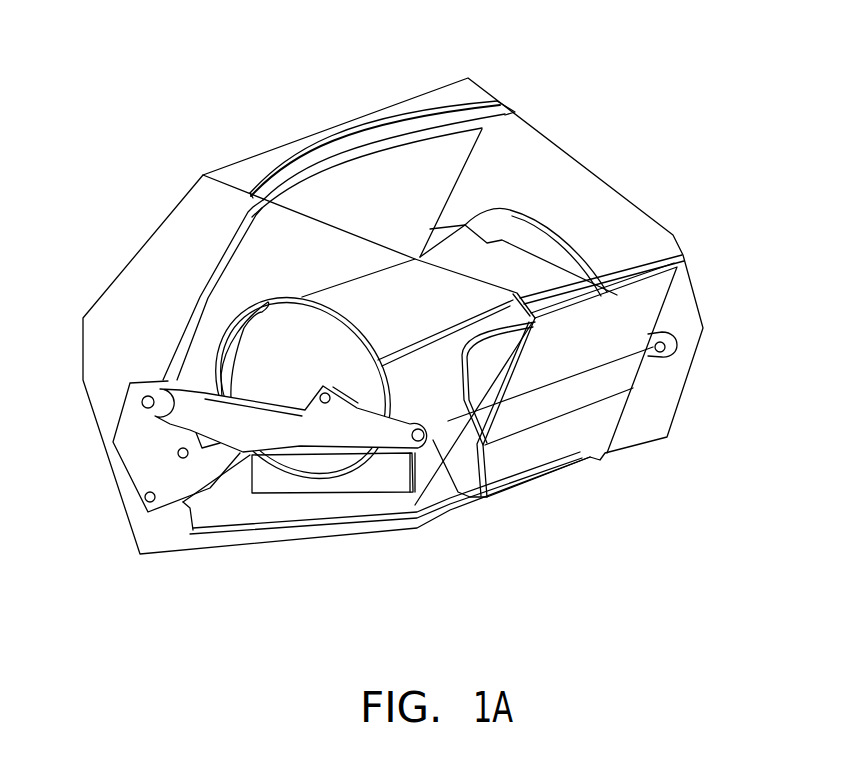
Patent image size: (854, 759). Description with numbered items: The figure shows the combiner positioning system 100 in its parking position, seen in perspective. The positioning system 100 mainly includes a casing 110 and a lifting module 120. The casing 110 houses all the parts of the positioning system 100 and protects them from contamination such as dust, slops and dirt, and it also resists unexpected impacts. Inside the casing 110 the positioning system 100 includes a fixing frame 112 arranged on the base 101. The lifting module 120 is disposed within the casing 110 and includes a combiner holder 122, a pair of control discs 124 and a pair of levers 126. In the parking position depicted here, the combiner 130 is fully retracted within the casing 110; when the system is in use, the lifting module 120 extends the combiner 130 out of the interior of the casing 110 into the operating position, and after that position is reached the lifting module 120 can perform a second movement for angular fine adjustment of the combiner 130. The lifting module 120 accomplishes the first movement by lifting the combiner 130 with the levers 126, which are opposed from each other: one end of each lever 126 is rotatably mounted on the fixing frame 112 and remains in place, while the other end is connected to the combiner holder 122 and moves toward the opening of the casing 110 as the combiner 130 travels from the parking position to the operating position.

The positioning system 100 is at (728, 591).
The base 101 is at (293, 543).
The casing 110 is at (597, 171).
The fixing frame 112 is at (257, 512).
The lifting module 120 is at (197, 270).
The combiner holder 122 is at (133, 465).
The control disc 124 is at (515, 226).
The lever 126 is at (362, 452).
The combiner 130 is at (370, 188).